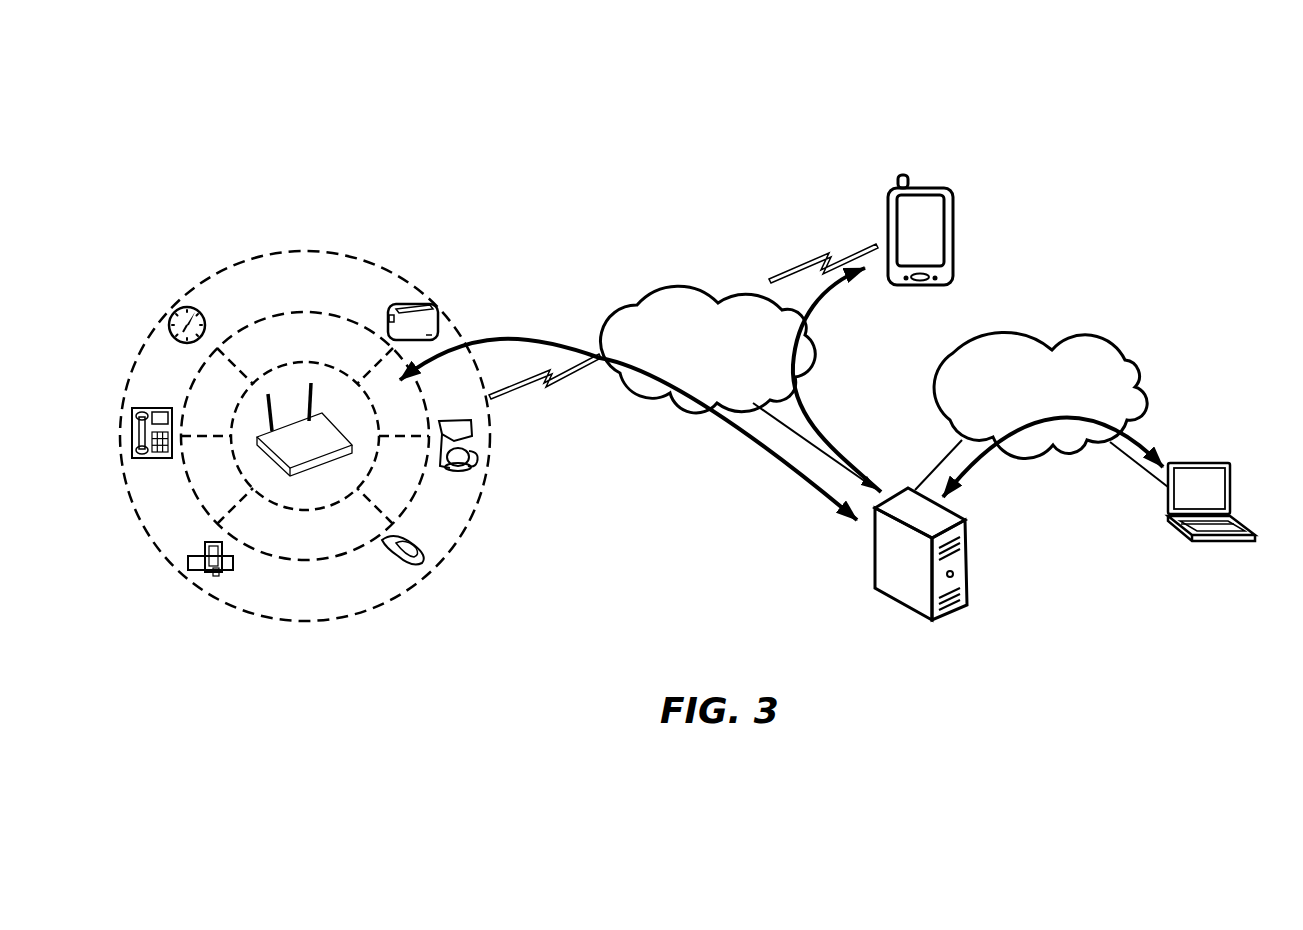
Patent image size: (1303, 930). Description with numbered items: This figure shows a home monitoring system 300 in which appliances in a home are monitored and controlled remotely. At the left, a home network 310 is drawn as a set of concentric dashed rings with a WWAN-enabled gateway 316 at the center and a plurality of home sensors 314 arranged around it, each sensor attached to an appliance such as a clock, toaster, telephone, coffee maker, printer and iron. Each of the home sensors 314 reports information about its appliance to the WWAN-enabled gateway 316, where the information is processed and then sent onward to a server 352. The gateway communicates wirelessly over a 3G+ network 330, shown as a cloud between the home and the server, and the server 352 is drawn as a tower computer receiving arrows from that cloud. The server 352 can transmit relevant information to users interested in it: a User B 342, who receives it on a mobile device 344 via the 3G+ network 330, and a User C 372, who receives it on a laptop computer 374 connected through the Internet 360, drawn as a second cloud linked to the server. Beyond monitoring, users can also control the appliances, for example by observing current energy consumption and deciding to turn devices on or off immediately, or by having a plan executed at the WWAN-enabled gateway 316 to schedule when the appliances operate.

The home monitoring system 300 is at (148, 88).
The home network 310 is at (283, 212).
The home sensors 314 is at (170, 320).
The WWAN-enabled gateway 316 is at (312, 447).
The 3G+ network 330 is at (688, 291).
The User B 342 is at (915, 146).
The mobile device of User B 344 is at (955, 219).
The server 352 is at (966, 532).
The Internet 360 is at (1090, 333).
The User C 372 is at (1203, 429).
The laptop computer of User C 374 is at (1238, 523).